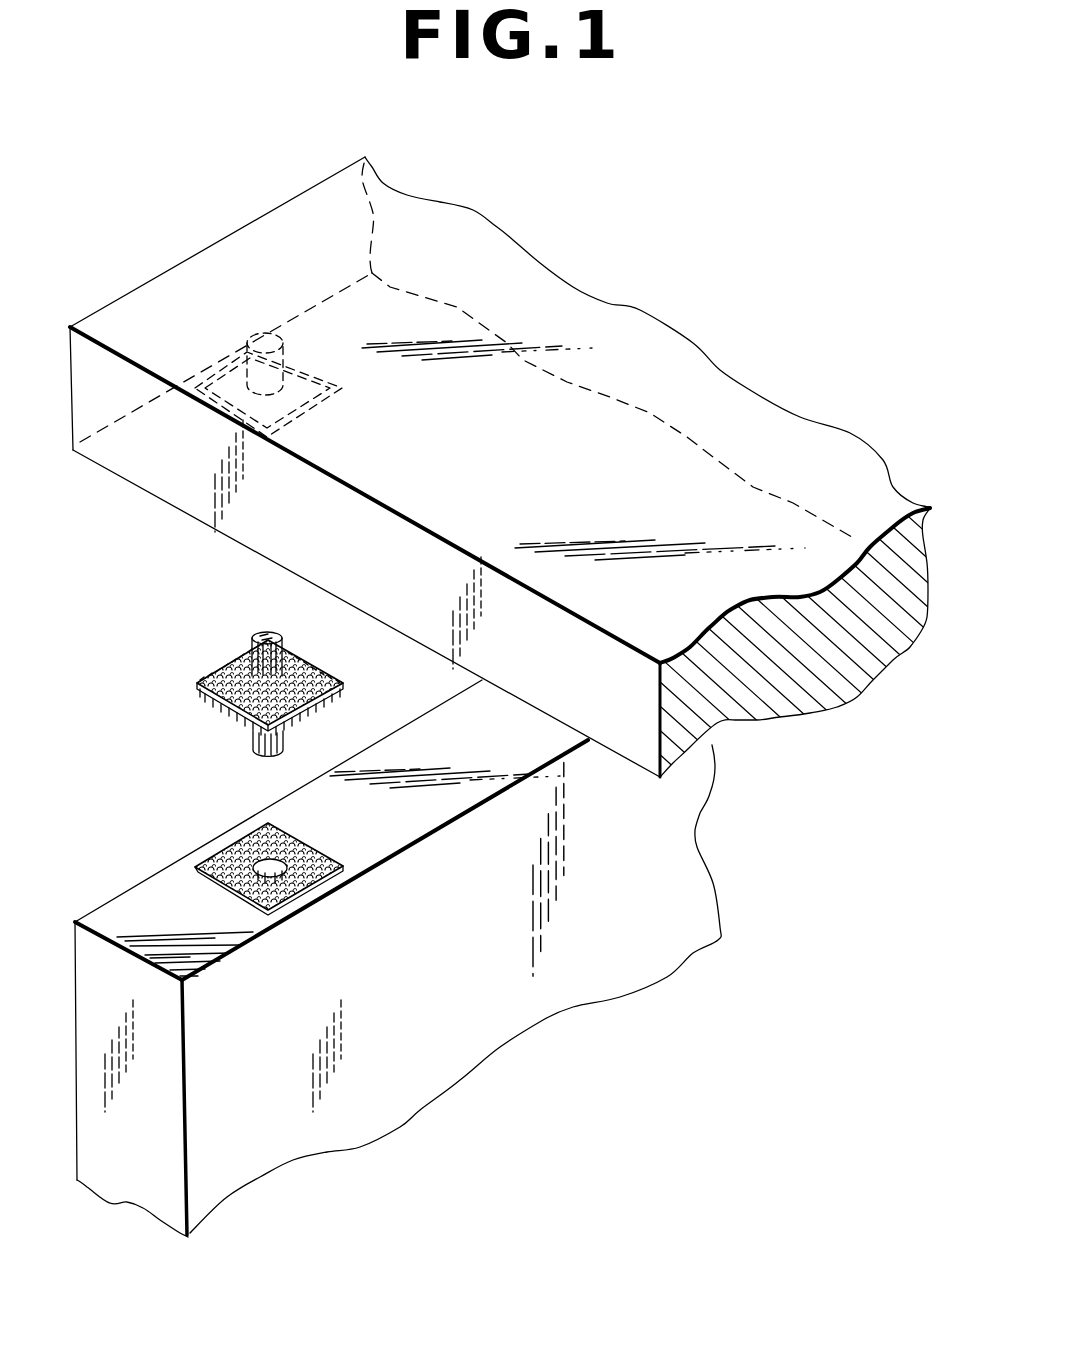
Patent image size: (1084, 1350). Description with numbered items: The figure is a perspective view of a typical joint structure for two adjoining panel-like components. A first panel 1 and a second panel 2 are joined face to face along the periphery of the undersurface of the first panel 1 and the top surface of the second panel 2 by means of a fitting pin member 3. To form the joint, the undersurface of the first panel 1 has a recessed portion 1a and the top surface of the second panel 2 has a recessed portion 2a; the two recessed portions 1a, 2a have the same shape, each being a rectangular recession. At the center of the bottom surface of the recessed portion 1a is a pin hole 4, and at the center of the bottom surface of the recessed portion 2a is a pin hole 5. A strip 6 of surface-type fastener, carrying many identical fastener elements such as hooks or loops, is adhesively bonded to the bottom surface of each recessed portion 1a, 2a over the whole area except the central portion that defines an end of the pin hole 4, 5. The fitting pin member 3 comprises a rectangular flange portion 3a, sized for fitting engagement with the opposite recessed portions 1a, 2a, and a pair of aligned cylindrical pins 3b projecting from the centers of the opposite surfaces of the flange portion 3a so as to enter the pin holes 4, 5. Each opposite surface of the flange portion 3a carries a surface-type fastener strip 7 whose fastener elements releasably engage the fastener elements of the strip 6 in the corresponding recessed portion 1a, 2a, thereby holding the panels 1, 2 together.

The first panel 1 is at (717, 423).
The recessed portion 1a is at (310, 407).
The second panel 2 is at (347, 1113).
The recessed portion 2a is at (300, 842).
The fitting pin member 3 is at (170, 637).
The flange portion 3a is at (195, 692).
The cylindrical pin 3b is at (248, 652).
The pin hole 4 is at (246, 353).
The pin hole 5 is at (290, 878).
The surface-type fastener strip 6 is at (203, 863).
The surface-type fastener strip 7 is at (204, 674).